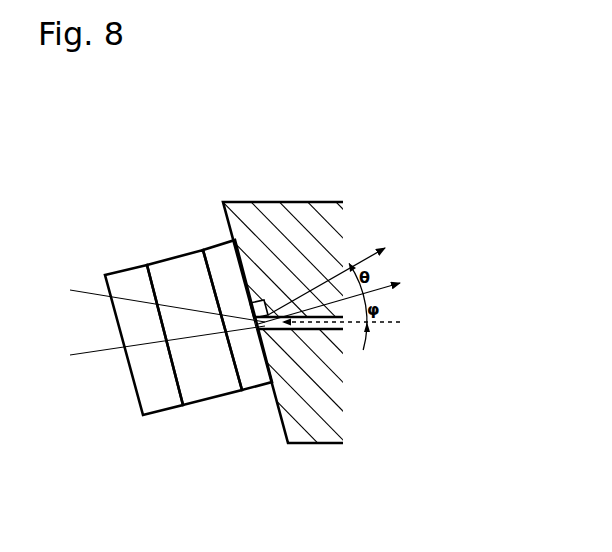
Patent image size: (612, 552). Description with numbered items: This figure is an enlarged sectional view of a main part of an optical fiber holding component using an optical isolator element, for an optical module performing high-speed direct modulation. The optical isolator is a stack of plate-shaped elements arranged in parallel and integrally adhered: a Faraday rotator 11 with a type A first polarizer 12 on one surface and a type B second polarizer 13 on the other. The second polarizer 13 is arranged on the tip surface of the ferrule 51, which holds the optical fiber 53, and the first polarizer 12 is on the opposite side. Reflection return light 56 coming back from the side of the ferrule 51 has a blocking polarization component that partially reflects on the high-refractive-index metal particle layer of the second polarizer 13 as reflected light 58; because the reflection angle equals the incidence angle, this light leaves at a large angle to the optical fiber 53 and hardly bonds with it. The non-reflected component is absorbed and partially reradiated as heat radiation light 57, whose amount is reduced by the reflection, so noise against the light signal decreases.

The ferrule 51 is at (316, 240).
The optical fiber 53 is at (302, 330).
The reflection return light 56 is at (402, 326).
The heat radiation light 57 is at (398, 286).
The reflected light 58 is at (390, 256).
The first polarizer 12 is at (127, 278).
The Faraday rotator 11 is at (188, 265).
The second polarizer 13 is at (232, 258).